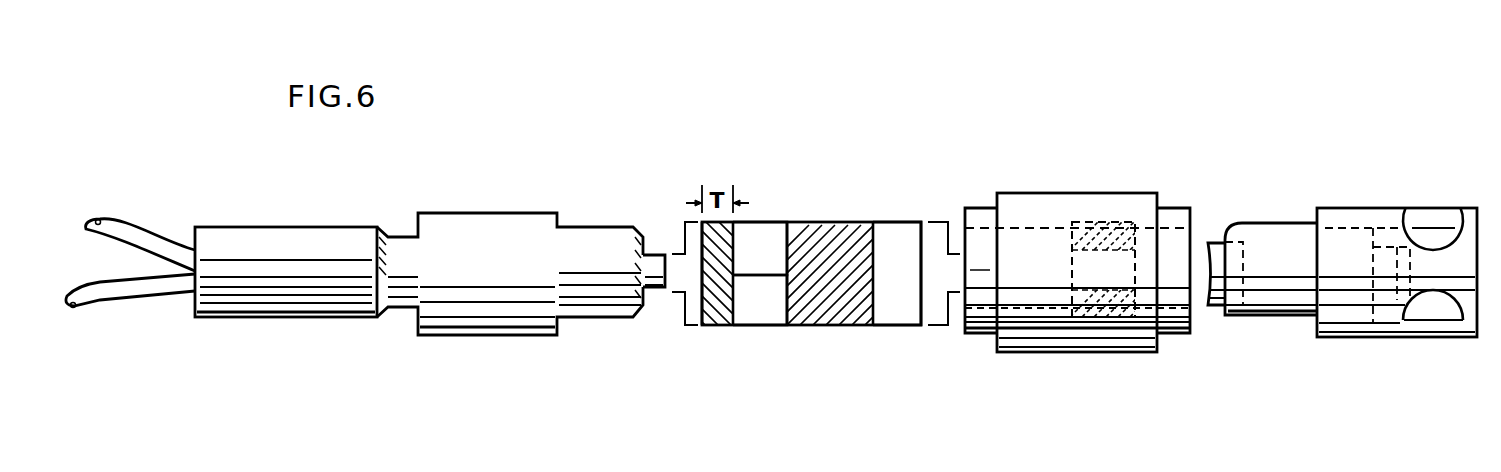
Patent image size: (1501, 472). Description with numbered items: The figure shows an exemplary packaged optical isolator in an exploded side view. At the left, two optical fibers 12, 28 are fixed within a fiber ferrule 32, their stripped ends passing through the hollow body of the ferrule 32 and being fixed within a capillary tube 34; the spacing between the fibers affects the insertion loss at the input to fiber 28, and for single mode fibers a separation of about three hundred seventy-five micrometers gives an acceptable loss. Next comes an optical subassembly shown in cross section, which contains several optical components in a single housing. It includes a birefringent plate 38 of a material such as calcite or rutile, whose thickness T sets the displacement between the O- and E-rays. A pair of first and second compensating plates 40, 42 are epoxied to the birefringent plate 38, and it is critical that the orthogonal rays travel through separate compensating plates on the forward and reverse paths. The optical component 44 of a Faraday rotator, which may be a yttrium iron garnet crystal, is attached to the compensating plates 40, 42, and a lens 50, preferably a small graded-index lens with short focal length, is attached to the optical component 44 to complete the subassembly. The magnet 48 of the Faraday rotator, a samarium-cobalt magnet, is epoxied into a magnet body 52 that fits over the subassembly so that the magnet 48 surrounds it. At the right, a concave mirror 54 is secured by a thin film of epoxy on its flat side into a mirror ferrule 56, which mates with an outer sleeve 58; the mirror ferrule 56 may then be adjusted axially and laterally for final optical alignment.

The fiber 12 is at (122, 227).
The fiber 28 is at (97, 296).
The fiber ferrule 32 is at (248, 306).
The capillary tube 34 is at (656, 253).
The birefringent plate 38 is at (716, 318).
The first compensating plate 40 is at (768, 230).
The second compensating plate 42 is at (772, 318).
The optical component of Faraday rotator 44 is at (838, 224).
The lens 50 is at (898, 228).
The magnet 48 is at (1102, 205).
The magnet body 52 is at (1050, 336).
The concave mirror 54 is at (1211, 307).
The mirror ferrule 56 is at (1280, 318).
The outer sleeve 58 is at (1376, 338).